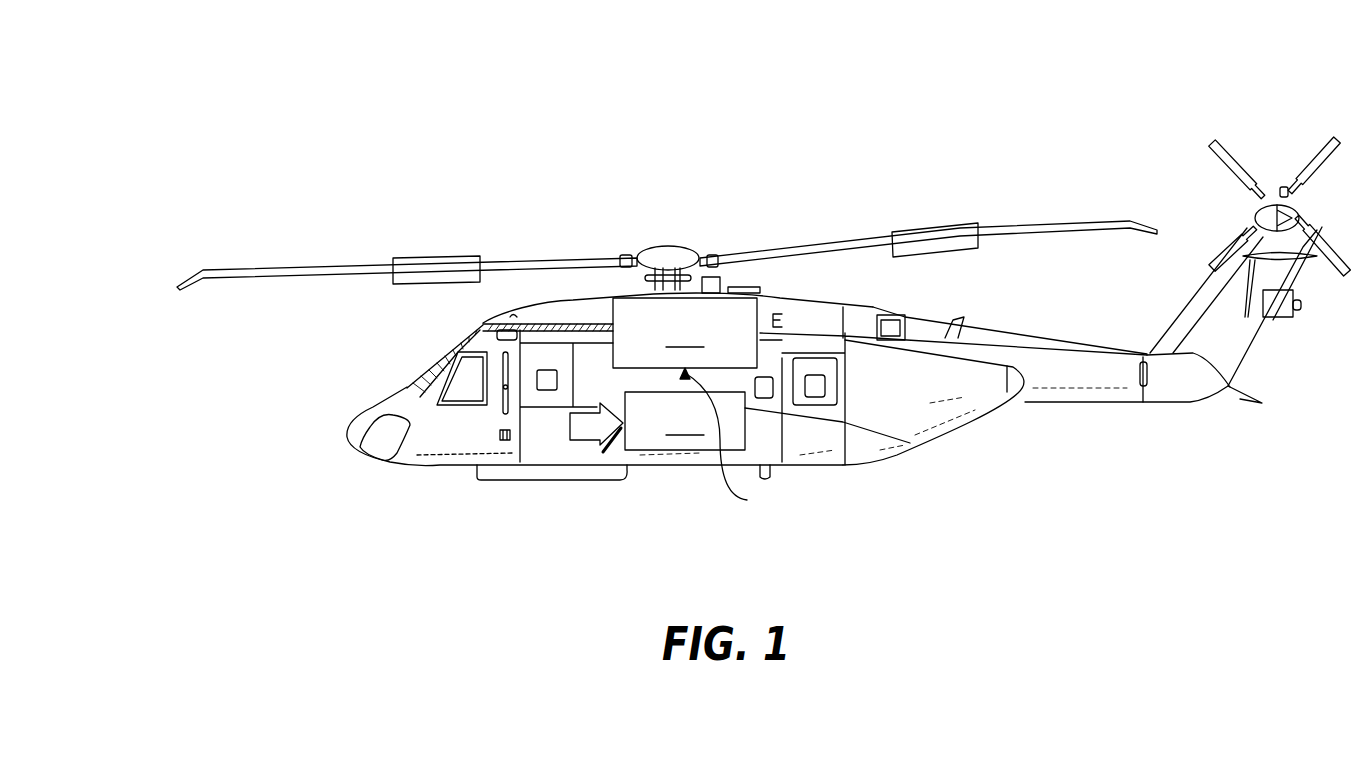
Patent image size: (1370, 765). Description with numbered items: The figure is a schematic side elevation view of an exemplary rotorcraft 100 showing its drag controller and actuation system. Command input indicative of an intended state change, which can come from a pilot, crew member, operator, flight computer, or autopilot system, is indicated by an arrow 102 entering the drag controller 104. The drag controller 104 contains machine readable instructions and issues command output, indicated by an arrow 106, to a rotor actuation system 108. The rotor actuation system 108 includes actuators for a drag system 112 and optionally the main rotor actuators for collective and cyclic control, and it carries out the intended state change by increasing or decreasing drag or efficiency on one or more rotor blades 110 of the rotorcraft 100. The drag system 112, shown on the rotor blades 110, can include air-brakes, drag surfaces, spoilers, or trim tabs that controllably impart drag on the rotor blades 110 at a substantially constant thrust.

The rotorcraft 100 is at (307, 118).
The command input arrow 102 is at (593, 430).
The drag controller 104 is at (685, 421).
The command output arrow 106 is at (741, 442).
The rotor actuation system 108 is at (685, 333).
The rotor blades 110 is at (307, 270).
The drag system 112 is at (430, 256).